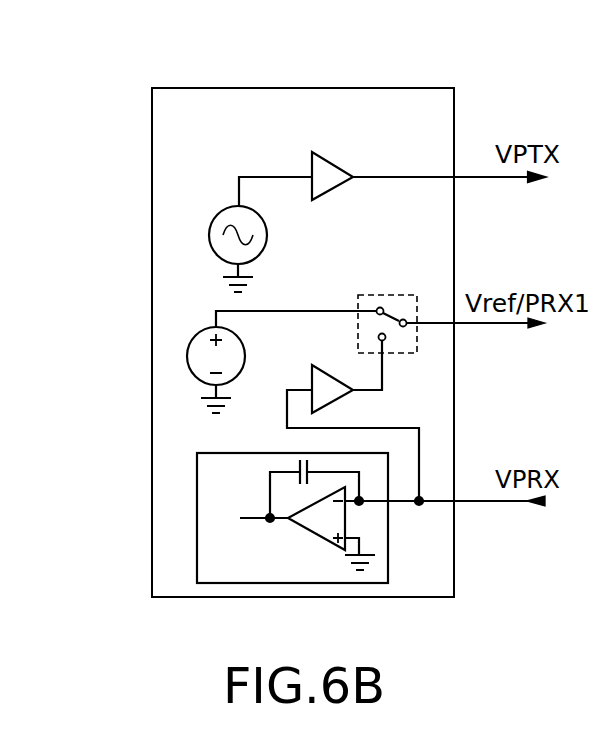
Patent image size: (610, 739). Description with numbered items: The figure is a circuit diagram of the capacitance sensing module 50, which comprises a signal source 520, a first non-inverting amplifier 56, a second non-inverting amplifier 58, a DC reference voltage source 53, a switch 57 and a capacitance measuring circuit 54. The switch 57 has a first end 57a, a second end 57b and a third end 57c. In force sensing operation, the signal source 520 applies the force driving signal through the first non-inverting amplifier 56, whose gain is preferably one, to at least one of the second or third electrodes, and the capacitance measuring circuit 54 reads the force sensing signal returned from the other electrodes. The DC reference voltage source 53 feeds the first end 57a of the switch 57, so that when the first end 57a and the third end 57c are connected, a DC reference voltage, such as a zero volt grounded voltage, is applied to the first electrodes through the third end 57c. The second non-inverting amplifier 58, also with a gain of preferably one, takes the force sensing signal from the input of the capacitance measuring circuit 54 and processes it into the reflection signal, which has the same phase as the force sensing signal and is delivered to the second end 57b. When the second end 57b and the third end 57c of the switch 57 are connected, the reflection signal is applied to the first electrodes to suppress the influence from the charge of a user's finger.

The capacitance sensing module 50 is at (303, 88).
The signal source 520 is at (209, 237).
The first non-inverting amplifier 56 is at (333, 190).
The DC reference voltage source 53 is at (187, 355).
The switch 57 is at (365, 324).
The first end 57a is at (378, 308).
The second end 57b is at (385, 341).
The third end 57c is at (405, 320).
The second non-inverting amplifier 58 is at (333, 402).
The capacitance measuring circuit 54 is at (262, 453).